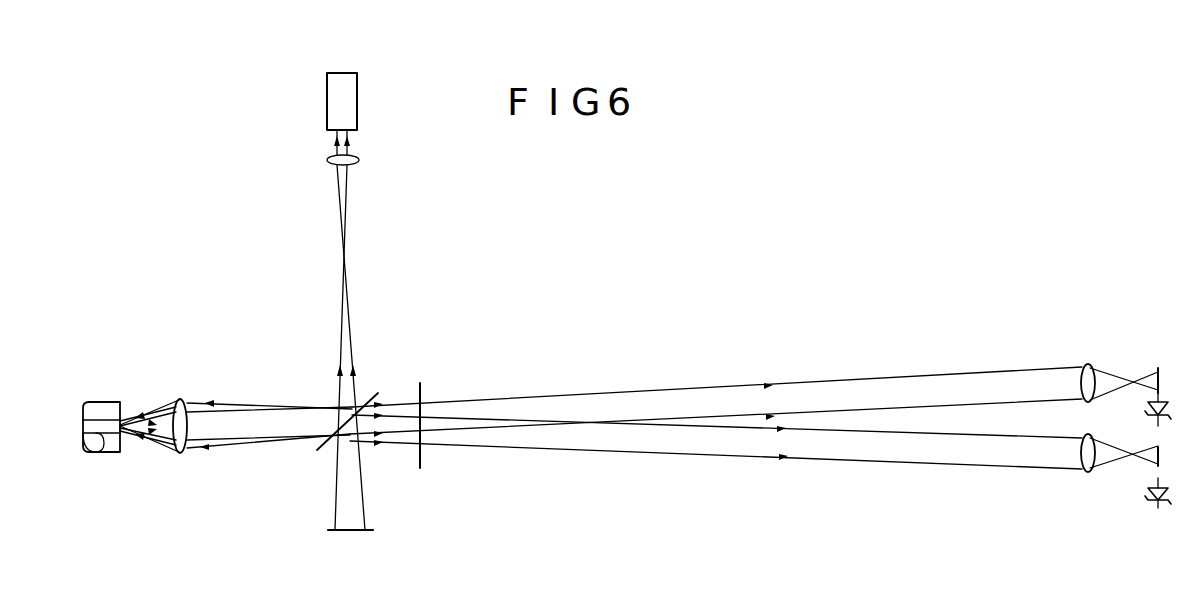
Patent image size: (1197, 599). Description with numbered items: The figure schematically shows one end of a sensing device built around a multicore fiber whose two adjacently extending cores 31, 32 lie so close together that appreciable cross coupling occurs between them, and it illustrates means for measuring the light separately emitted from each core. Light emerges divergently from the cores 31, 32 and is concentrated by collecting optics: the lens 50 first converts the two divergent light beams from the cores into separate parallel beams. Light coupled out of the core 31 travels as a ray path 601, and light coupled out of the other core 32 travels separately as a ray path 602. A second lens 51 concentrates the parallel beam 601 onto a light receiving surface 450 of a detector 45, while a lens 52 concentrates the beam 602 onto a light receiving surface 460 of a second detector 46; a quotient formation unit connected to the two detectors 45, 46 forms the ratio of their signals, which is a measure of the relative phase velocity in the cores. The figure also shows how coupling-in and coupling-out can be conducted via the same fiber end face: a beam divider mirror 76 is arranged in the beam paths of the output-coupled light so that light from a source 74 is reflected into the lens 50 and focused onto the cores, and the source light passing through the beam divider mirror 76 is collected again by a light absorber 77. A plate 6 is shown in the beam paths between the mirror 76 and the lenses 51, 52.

The core 31 is at (112, 408).
The core 32 is at (101, 453).
The lens 50 is at (182, 399).
The light source 74 is at (358, 100).
The beam divider mirror 76 is at (318, 452).
The light absorber 77 is at (340, 532).
The plane-parallel plate 6 is at (430, 368).
The ray path 601 is at (943, 437).
The ray path 602 is at (990, 400).
The lens 51 is at (1088, 472).
The lens 52 is at (1090, 365).
The light receiving surface 450 is at (1158, 466).
The light receiving surface 460 is at (1164, 366).
The detector 45 is at (1150, 502).
The detector 46 is at (1143, 415).